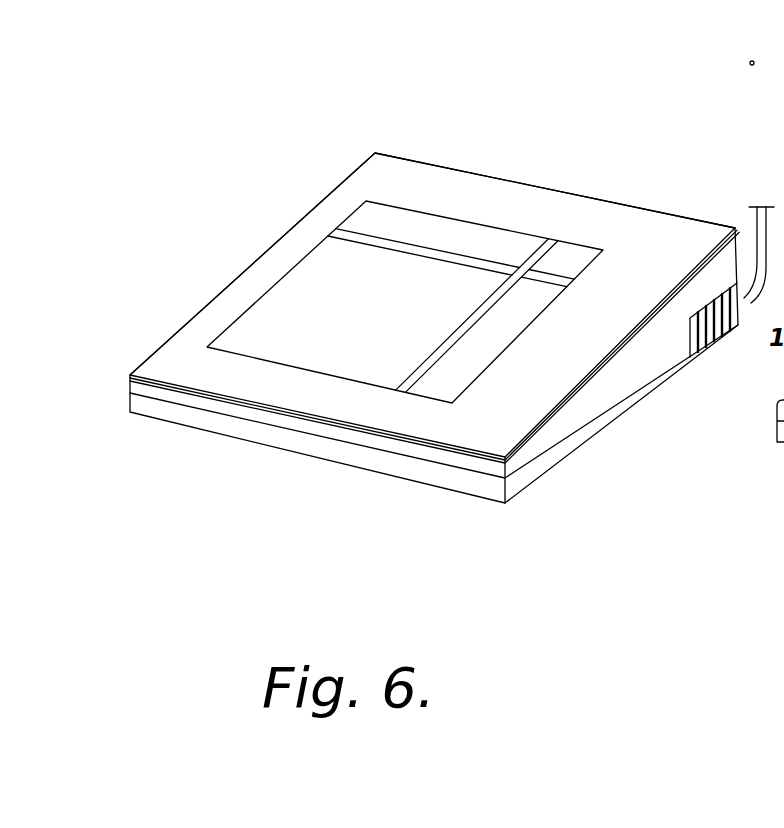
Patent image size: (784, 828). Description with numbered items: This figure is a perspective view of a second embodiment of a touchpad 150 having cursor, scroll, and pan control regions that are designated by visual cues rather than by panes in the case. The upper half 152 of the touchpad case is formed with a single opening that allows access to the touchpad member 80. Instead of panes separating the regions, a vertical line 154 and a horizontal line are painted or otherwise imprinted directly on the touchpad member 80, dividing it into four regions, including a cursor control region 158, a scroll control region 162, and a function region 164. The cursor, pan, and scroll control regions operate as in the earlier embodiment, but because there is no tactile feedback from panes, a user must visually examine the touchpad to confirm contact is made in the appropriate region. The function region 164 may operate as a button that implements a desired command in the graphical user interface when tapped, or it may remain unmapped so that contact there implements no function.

The touchpad 150 is at (345, 108).
The touchpad member 80 is at (218, 343).
The upper half of the touchpad case 152 is at (490, 193).
The cursor control region 158 is at (322, 258).
The vertical line 154 is at (540, 253).
The function region 164 is at (578, 260).
The scroll control region 162 is at (442, 383).